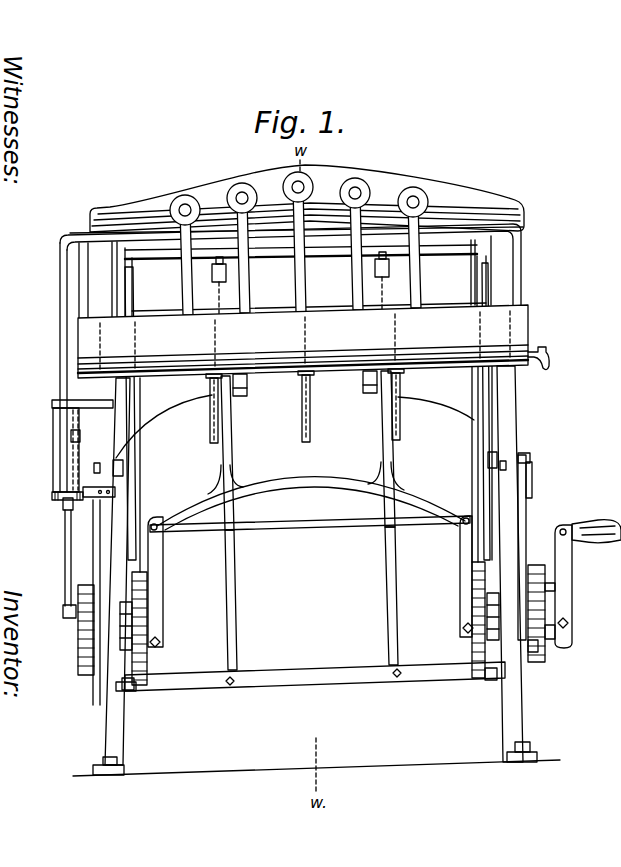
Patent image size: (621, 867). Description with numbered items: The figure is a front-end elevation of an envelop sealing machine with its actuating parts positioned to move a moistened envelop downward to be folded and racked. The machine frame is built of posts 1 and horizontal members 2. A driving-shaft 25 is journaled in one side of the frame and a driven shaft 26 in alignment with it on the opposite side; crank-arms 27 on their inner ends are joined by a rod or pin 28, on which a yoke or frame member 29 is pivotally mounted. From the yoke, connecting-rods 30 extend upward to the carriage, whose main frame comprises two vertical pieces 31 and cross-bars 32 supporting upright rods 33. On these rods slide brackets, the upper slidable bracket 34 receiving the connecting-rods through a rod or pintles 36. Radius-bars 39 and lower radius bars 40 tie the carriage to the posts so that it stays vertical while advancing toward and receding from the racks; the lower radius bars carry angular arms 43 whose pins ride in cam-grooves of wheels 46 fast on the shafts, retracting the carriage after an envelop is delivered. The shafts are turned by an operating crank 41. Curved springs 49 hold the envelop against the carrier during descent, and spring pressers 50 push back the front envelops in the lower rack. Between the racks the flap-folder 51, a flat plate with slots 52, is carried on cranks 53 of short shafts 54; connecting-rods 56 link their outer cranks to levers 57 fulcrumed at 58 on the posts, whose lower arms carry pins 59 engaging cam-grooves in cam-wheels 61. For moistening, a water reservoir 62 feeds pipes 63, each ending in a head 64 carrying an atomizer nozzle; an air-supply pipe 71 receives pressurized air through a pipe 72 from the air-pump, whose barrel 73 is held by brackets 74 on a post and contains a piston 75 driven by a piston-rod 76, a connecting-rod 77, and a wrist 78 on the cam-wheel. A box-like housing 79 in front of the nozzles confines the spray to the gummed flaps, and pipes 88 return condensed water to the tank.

The posts 1 is at (125, 748).
The horizontal members 2 is at (460, 253).
The driving-shaft 25 is at (553, 637).
The driven shaft 26 is at (100, 674).
The crank-arms 27 is at (164, 600).
The rod or pin 28 is at (318, 528).
The yoke or frame member 29 is at (307, 477).
The connecting-rods 30 is at (233, 443).
The vertical pieces 31 is at (127, 278).
The cross-bars 32 is at (267, 683).
The upright rods 33 is at (236, 640).
The upper slidable bracket 34 is at (212, 273).
The rod or pintles 36 is at (227, 272).
The upper radius-bars 39 is at (120, 292).
The lower radius bars 40 is at (147, 628).
The operating crank 41 is at (573, 558).
The angular arms 43 is at (120, 686).
The cam-groove wheels 46 is at (150, 663).
The curved springs 49 is at (208, 390).
The spring pressers 50 is at (246, 388).
The flap-folder 51 is at (463, 415).
The slots 52 is at (210, 427).
The cranks 53 is at (123, 466).
The short shafts 54 is at (94, 468).
The connecting-rods 56 is at (115, 496).
The levers 57 is at (527, 500).
The lever fulcrum 58 is at (527, 587).
The pins 59 is at (530, 646).
The cam-wheels 61 is at (80, 671).
The water reservoir 62 is at (78, 360).
The pipes 63 is at (183, 298).
The head 64 is at (185, 196).
The air-supply pipe 71 is at (204, 230).
The pipe 72 is at (60, 333).
The barrel 73 is at (55, 452).
The brackets 74 is at (78, 400).
The piston 75 is at (63, 437).
The piston-rod 76 is at (64, 513).
The connecting-rod 77 is at (66, 553).
The wrist 78 is at (64, 612).
The box-like housing 79 is at (97, 222).
The pipes 88 is at (78, 254).